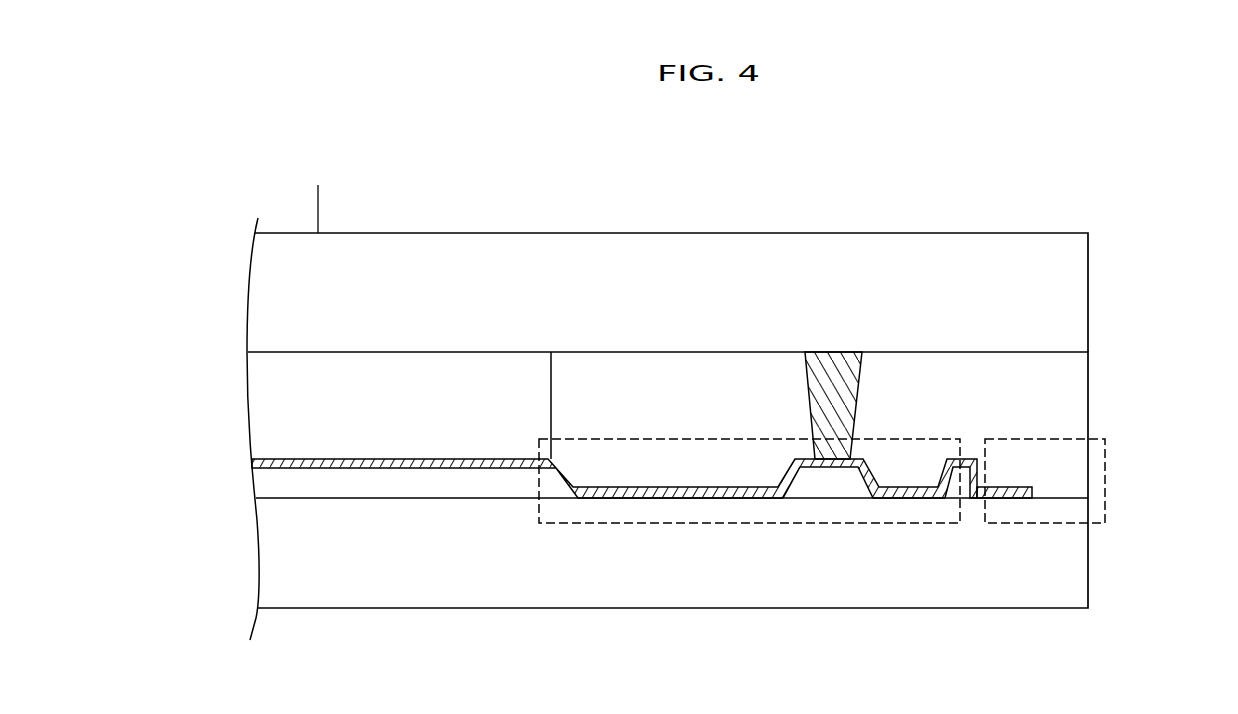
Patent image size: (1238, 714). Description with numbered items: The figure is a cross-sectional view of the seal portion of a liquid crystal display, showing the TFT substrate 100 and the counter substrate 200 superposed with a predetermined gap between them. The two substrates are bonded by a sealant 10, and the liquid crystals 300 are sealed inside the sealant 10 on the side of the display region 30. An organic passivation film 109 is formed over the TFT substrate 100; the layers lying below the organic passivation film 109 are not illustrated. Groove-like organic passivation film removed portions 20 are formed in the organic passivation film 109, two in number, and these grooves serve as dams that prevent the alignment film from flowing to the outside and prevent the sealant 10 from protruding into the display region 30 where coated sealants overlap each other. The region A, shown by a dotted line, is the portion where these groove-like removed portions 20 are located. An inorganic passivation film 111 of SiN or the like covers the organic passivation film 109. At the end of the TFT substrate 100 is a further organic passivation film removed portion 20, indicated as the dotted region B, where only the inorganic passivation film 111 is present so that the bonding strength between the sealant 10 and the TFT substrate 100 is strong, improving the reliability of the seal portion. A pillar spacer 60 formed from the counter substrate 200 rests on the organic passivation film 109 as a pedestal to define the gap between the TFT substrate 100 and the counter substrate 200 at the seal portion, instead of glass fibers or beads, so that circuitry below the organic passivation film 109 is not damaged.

The sealant 10 is at (1075, 390).
The organic passivation film removed portion 20 is at (697, 466).
The display region 30 is at (318, 208).
The pillar spacer 60 is at (830, 372).
The TFT substrate 100 is at (1075, 583).
The organic passivation film 109 is at (440, 488).
The inorganic passivation film 111 is at (1003, 488).
The counter substrate 200 is at (1075, 270).
The liquid crystals 300 is at (266, 398).
The region A is at (752, 523).
The region B is at (1020, 525).